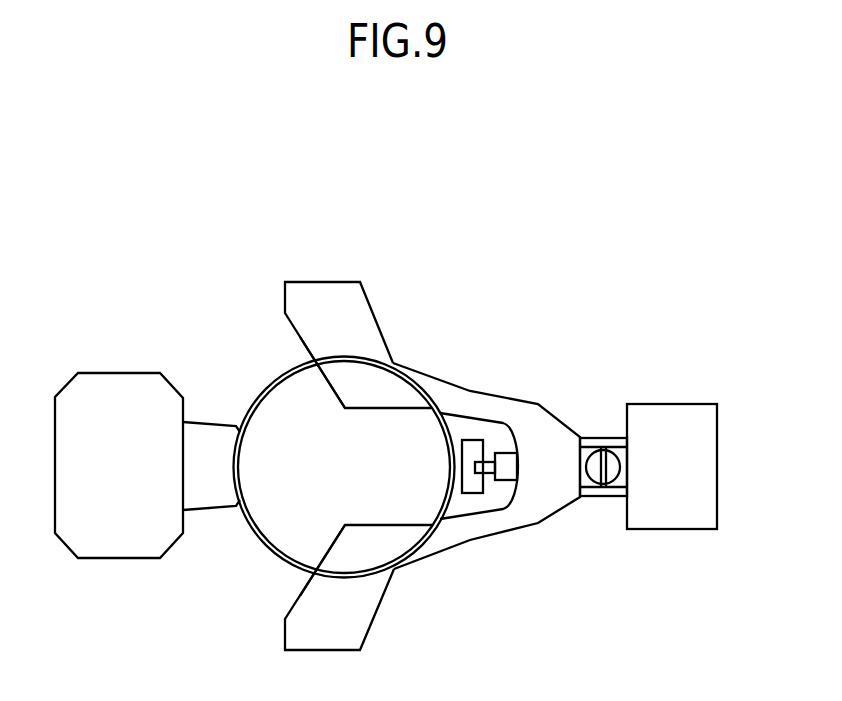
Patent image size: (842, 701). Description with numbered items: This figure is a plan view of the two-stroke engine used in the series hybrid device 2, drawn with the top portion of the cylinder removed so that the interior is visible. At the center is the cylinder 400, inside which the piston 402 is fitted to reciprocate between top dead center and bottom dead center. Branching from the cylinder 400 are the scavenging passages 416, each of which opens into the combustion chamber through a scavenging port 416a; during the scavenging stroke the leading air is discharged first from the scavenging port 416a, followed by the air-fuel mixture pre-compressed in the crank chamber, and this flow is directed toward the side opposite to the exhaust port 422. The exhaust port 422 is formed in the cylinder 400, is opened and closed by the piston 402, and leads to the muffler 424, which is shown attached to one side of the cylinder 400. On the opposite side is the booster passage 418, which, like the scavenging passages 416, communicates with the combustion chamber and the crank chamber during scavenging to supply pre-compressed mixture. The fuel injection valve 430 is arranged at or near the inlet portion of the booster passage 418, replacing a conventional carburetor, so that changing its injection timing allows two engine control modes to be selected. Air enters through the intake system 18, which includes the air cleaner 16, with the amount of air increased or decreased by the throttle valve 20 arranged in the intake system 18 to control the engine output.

The series hybrid device 2 is at (562, 237).
The air cleaner 16 is at (698, 460).
The intake system 18 is at (565, 508).
The throttle valve 20 is at (618, 458).
The cylinder 400 is at (275, 372).
The piston 402 is at (278, 447).
The scavenging passage 416 is at (337, 292).
The scavenging port 416a is at (360, 343).
The booster passage 418 is at (473, 448).
The exhaust port 422 is at (208, 492).
The muffler 424 is at (103, 373).
The fuel injection valve 430 is at (502, 480).